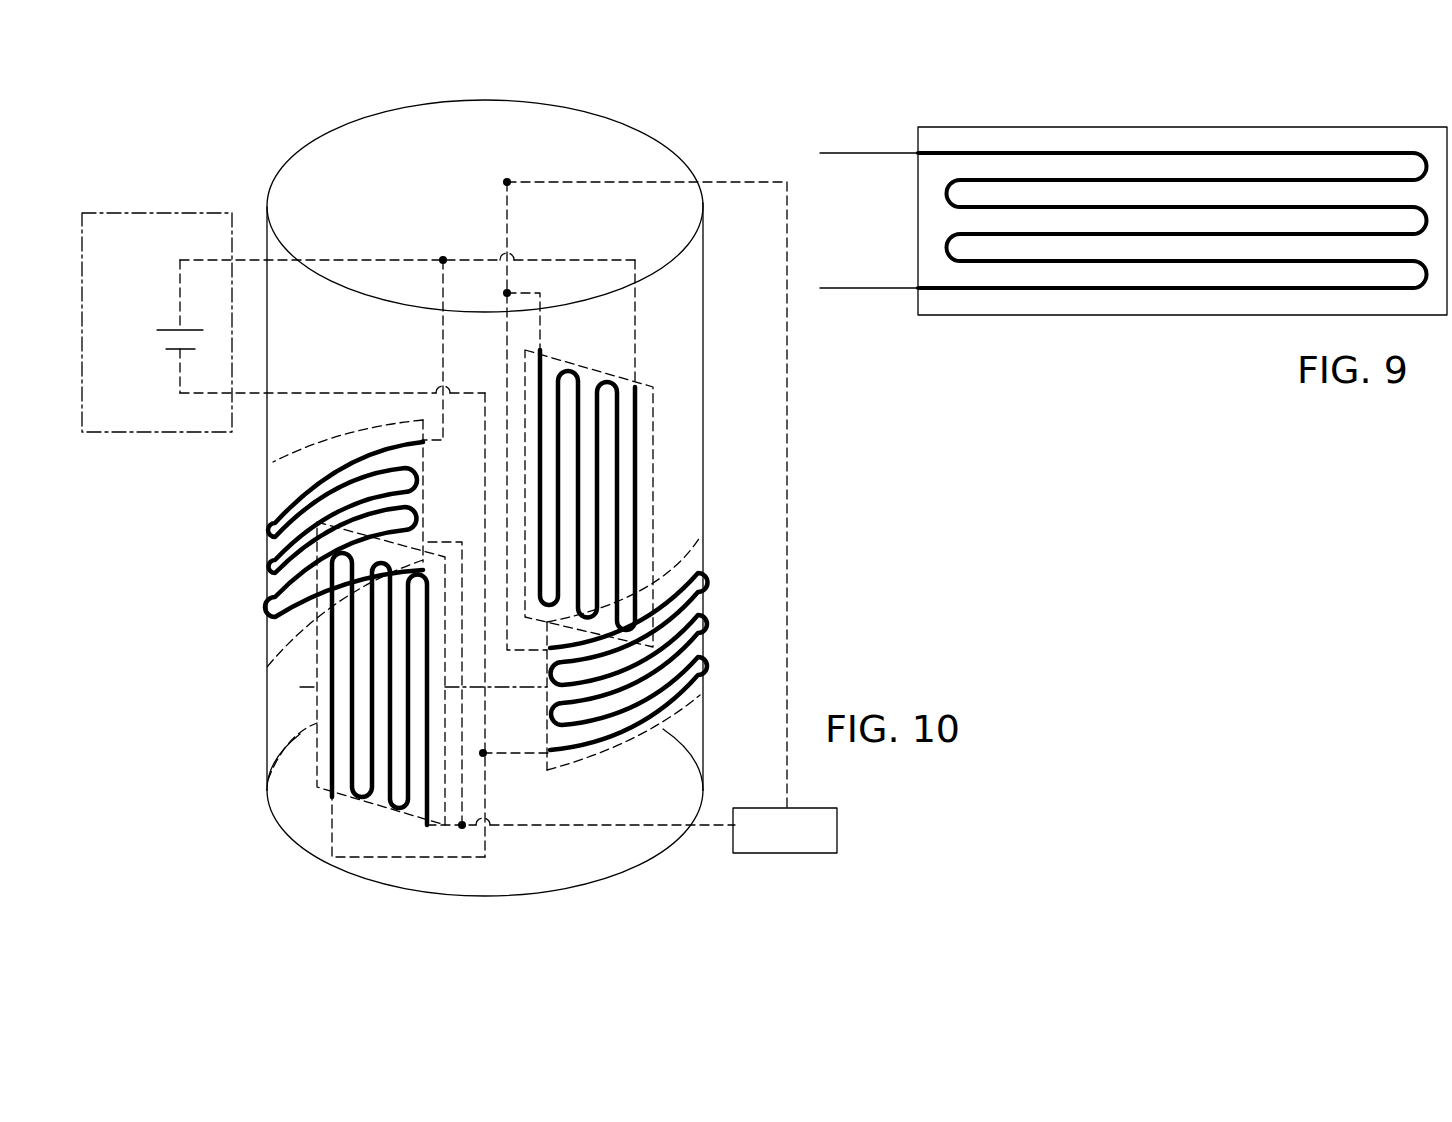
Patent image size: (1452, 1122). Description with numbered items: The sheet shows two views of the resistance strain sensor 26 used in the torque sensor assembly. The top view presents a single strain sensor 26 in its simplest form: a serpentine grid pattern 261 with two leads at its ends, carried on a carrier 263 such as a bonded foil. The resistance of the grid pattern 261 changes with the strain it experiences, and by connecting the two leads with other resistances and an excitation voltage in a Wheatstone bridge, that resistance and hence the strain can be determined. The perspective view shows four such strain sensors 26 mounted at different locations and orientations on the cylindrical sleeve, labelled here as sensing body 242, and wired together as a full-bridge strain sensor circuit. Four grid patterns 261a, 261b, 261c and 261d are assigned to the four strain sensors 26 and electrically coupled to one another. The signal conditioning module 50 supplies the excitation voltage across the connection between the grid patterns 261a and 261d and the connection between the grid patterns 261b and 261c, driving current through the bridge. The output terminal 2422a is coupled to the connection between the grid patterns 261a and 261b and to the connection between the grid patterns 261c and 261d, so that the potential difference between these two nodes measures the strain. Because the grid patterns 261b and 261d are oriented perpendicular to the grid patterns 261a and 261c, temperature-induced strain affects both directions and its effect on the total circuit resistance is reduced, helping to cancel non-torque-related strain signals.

In FIG. 10, the strain sensor 26 is at (637, 105).
In FIG. 9, the strain sensor 26 is at (1333, 108).
In FIG. 10, the sensing body 242 is at (405, 188).
In FIG. 10, the signal conditioning module 50 is at (138, 255).
In FIG. 9, the grid pattern 261 is at (1193, 152).
In FIG. 9, the carrier 263 is at (1168, 298).
In FIG. 10, the grid pattern 261a is at (313, 452).
In FIG. 10, the grid pattern 261b is at (300, 688).
In FIG. 10, the grid pattern 261c is at (683, 565).
In FIG. 10, the grid pattern 261d is at (653, 418).
In FIG. 10, the output terminal 2422a is at (785, 830).